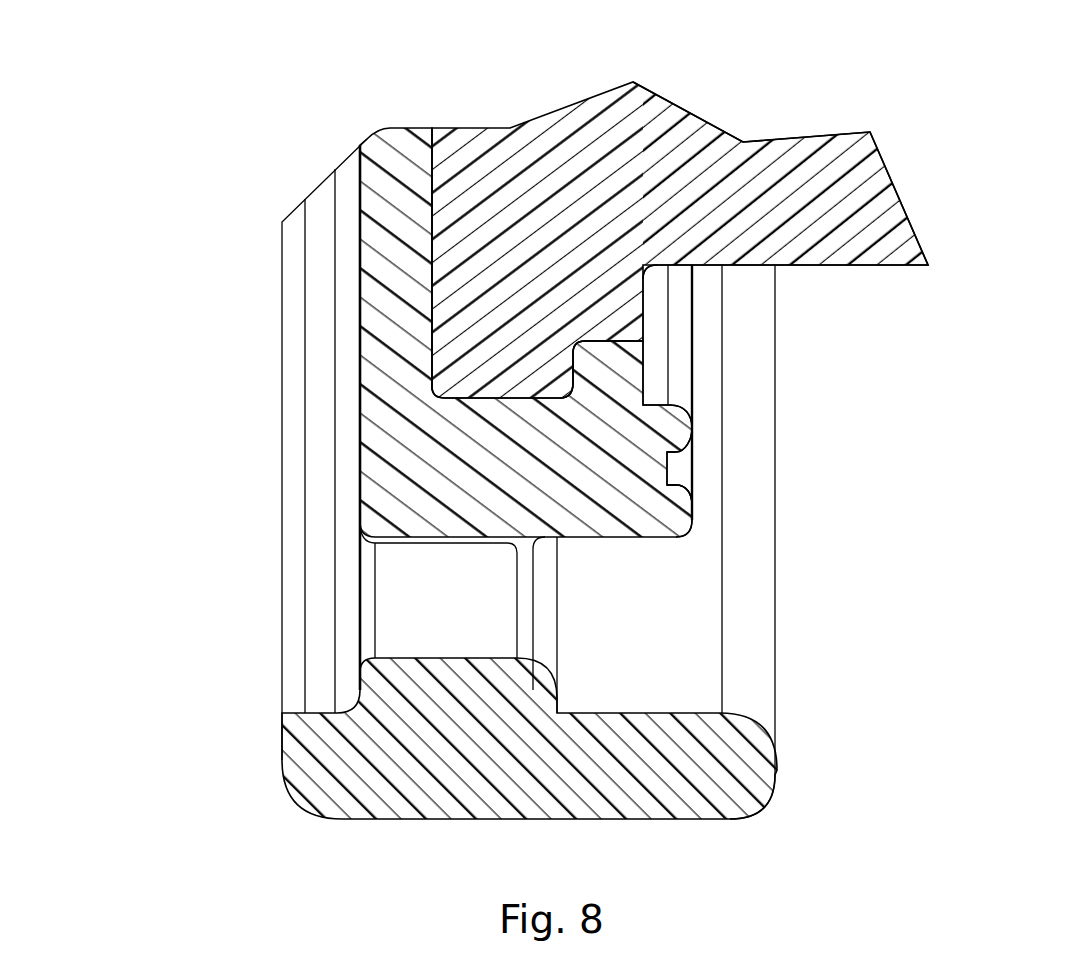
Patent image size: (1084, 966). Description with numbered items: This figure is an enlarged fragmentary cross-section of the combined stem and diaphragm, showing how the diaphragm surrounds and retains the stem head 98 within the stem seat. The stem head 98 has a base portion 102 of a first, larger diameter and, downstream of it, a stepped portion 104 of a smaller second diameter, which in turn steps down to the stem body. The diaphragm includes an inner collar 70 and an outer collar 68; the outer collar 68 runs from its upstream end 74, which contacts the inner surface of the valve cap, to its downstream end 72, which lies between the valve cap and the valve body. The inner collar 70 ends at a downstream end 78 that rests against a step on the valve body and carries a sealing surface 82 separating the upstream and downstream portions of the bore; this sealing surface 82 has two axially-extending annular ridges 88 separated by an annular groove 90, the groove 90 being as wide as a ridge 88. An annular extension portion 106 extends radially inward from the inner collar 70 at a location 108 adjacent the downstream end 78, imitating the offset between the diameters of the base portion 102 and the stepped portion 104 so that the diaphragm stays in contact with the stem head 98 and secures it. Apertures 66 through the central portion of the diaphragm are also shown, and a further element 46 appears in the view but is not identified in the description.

The housing flange 46 is at (835, 157).
The stem head 98 is at (581, 155).
The annular extension portion 106 is at (592, 375).
The base portion 102 is at (452, 292).
The stepped portion 104 is at (633, 295).
The downstream end of the inner collar 78 is at (703, 397).
The annular ridges 88 is at (670, 430).
The annular groove 90 is at (670, 467).
The sealing surface 82 is at (670, 480).
The inner collar 70 is at (630, 518).
The location adjacent the downstream end of the inner collar 108 is at (600, 440).
The apertures 66 is at (392, 622).
The upstream end of the outer collar 74 is at (297, 780).
The downstream end of the outer collar 72 is at (776, 772).
The outer collar 68 is at (752, 793).